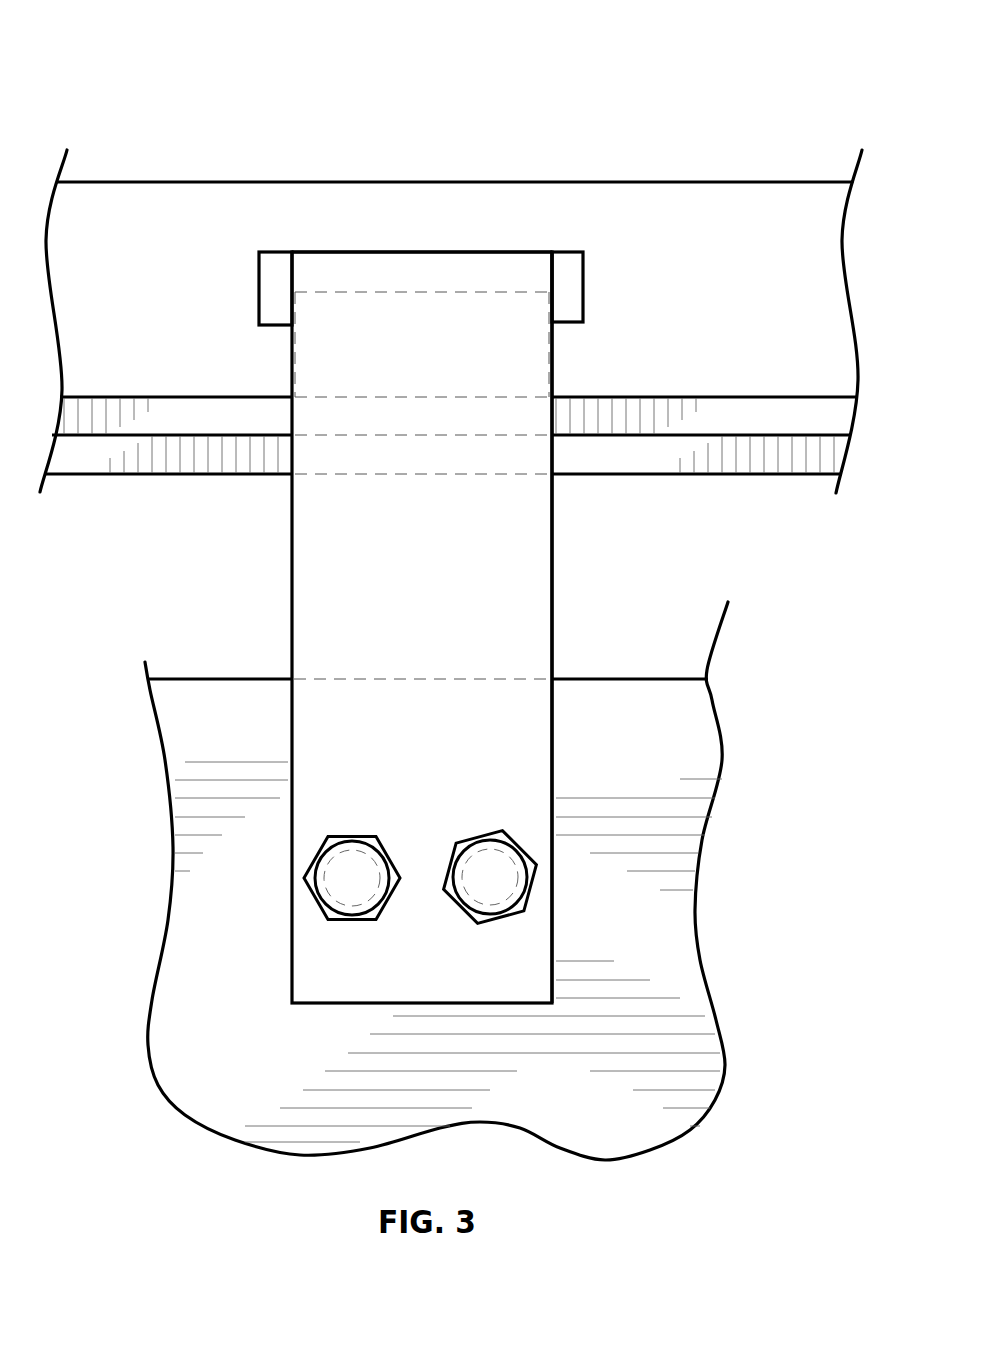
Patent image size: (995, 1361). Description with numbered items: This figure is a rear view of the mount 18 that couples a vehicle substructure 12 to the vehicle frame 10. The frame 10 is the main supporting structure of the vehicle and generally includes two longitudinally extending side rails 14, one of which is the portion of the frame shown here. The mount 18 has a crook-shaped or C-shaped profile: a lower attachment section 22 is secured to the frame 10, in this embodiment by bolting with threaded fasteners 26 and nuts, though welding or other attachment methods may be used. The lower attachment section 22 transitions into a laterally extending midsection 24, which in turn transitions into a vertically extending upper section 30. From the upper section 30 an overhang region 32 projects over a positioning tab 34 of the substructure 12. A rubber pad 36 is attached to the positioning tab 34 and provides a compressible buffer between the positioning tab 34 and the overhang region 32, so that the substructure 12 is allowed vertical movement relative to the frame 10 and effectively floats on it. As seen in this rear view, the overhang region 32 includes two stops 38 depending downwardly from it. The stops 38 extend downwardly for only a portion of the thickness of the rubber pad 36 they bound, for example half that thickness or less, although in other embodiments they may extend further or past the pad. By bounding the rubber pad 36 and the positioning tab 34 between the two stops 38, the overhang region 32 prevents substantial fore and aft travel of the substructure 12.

The frame 10 is at (198, 679).
The substructure 12 is at (122, 182).
The side rail 14 is at (671, 733).
The mount 18 is at (342, 503).
The lower attachment section 22 is at (553, 750).
The laterally extending midsection 24 is at (553, 581).
The threaded fastener 26 is at (310, 893).
The vertically extending upper section 30 is at (432, 368).
The overhang region 32 is at (347, 252).
The positioning tab 34 is at (123, 397).
The rubber pad 36 is at (505, 364).
The stop 38 is at (268, 277).